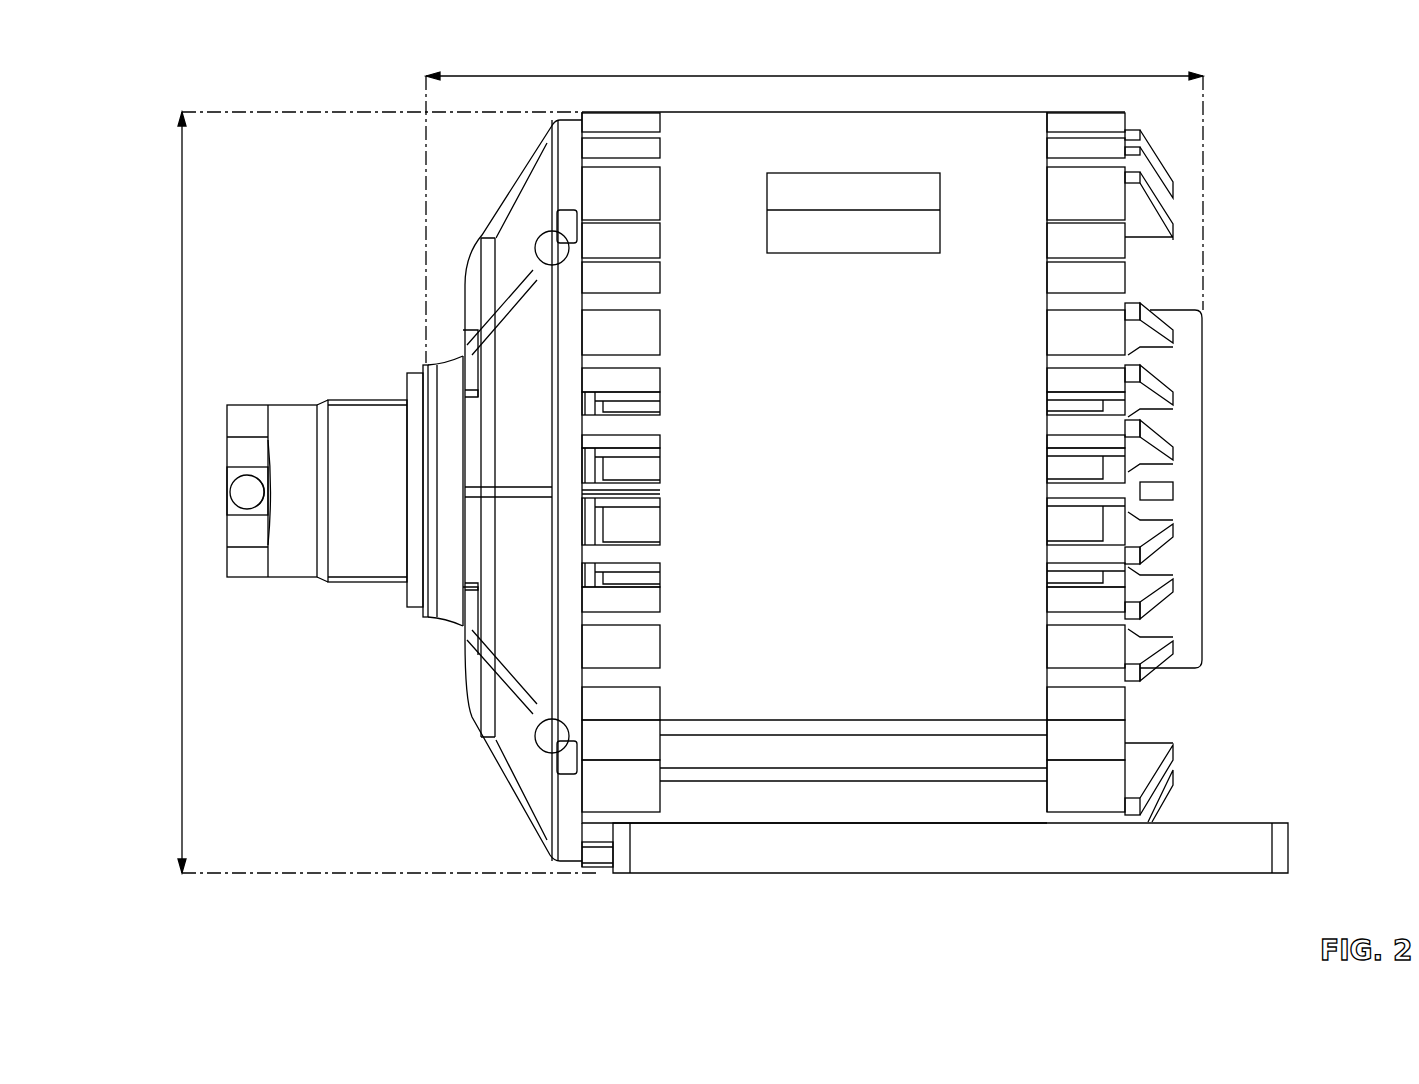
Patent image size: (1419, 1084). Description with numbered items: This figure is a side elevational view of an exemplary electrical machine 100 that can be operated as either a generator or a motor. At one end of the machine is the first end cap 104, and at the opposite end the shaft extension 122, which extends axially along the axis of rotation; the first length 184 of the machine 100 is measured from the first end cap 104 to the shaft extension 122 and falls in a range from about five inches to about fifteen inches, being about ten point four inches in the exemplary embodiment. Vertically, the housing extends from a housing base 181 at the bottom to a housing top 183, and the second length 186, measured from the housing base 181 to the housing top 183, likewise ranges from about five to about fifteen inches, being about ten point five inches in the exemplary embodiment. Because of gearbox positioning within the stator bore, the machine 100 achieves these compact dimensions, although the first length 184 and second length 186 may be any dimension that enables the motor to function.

The electrical machine 100 is at (262, 76).
The first end cap 104 is at (423, 372).
The shaft extension 122 is at (1202, 312).
The housing base 181 is at (605, 870).
The housing top 183 is at (914, 112).
The first length 184 is at (768, 75).
The second length 186 is at (182, 492).